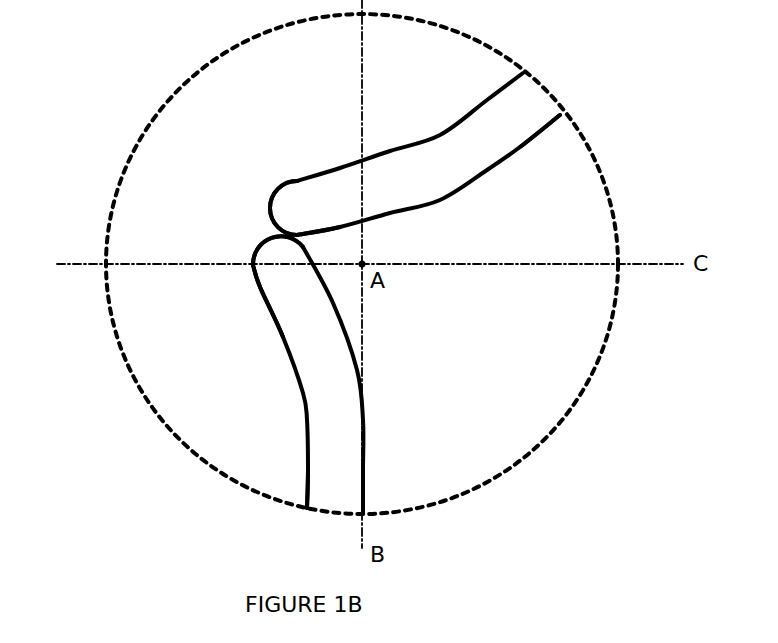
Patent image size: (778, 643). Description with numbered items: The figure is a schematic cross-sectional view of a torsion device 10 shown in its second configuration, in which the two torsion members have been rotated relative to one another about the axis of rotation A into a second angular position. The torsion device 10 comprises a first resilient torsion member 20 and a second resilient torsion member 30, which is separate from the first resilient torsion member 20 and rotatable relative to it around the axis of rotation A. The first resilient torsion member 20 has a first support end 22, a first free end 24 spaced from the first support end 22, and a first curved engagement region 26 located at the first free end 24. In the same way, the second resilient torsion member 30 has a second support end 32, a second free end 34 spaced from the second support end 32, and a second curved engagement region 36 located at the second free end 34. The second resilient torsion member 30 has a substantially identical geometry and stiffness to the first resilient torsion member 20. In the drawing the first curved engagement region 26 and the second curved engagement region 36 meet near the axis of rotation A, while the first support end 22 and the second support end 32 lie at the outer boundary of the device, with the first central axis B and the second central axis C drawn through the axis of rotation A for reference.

The torsion device 10 is at (110, 138).
The first resilient torsion member 20 is at (300, 393).
The first support end 22 is at (307, 497).
The first free end 24 is at (252, 270).
The first curved engagement region 26 is at (272, 232).
The second resilient torsion member 30 is at (480, 188).
The second support end 32 is at (553, 130).
The second free end 34 is at (280, 188).
The second curved engagement region 36 is at (316, 244).